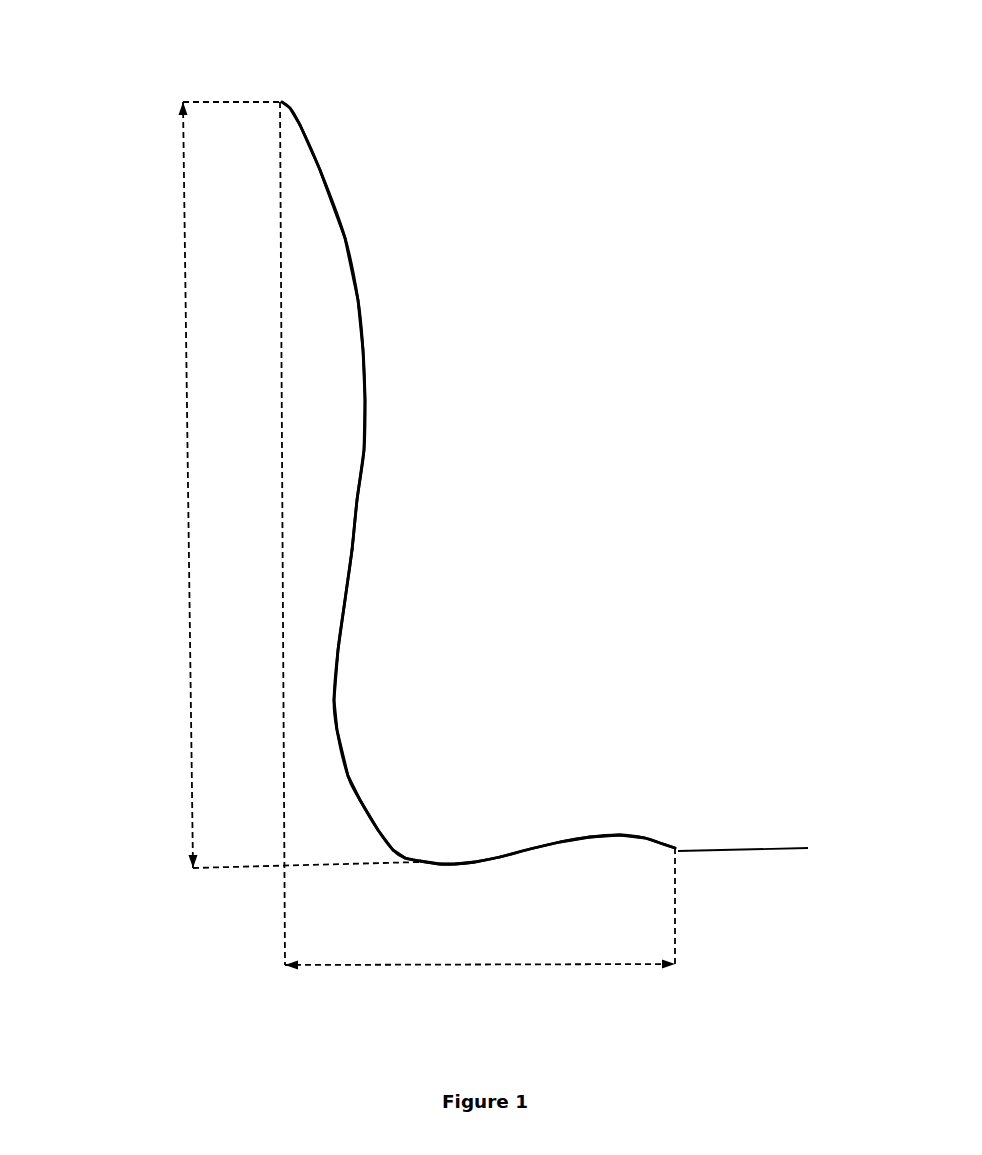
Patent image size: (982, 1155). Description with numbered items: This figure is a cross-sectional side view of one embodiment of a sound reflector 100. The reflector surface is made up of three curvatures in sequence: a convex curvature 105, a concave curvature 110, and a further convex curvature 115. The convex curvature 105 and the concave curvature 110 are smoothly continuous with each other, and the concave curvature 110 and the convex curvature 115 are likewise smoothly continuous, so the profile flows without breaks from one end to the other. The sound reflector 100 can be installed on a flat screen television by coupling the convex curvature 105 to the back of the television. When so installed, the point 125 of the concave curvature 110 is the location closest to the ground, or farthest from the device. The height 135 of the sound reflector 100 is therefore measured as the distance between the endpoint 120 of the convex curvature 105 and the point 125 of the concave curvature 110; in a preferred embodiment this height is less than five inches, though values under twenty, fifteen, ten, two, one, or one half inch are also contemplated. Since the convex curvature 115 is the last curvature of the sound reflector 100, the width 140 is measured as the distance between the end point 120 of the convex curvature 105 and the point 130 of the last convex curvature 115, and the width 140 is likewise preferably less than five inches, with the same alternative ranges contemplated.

The sound reflector 100 is at (640, 86).
The convex curvature 105 is at (345, 238).
The concave curvature 110 is at (348, 776).
The convex curvature 115 is at (638, 835).
The endpoint of the convex curvature 120 is at (284, 101).
The point of the concave curvature 125 is at (420, 860).
The point of the last convex curvature 130 is at (770, 846).
The height 135 is at (182, 445).
The width 140 is at (484, 967).